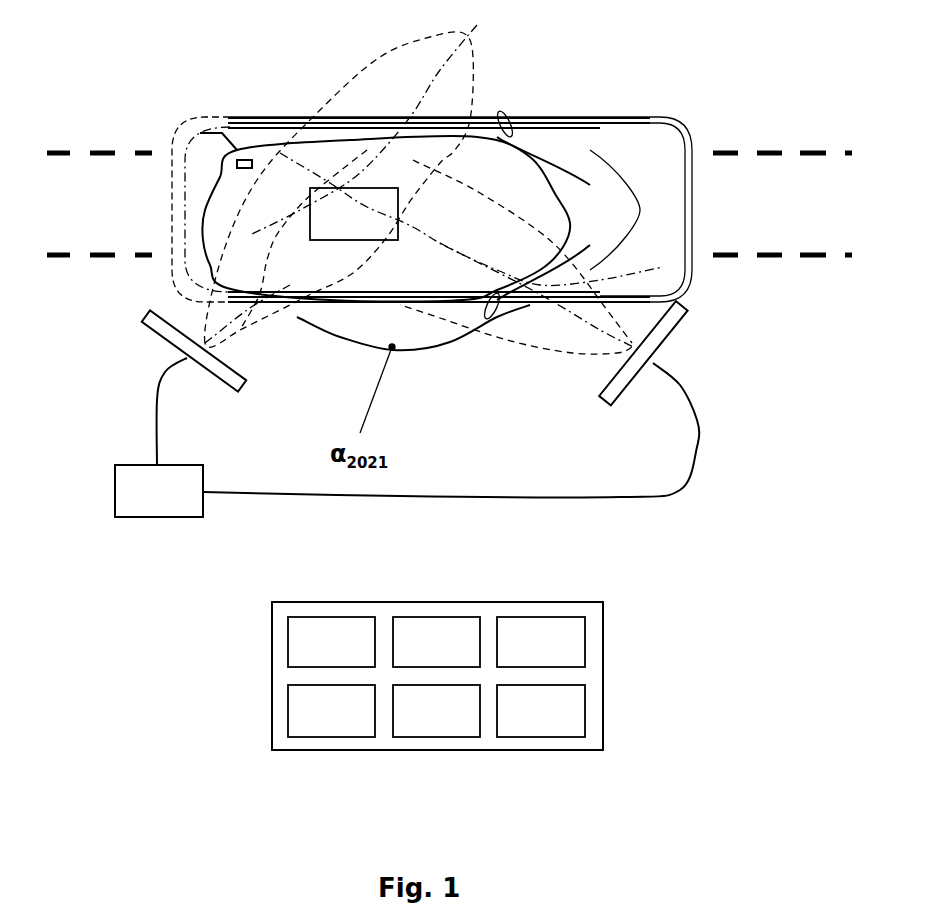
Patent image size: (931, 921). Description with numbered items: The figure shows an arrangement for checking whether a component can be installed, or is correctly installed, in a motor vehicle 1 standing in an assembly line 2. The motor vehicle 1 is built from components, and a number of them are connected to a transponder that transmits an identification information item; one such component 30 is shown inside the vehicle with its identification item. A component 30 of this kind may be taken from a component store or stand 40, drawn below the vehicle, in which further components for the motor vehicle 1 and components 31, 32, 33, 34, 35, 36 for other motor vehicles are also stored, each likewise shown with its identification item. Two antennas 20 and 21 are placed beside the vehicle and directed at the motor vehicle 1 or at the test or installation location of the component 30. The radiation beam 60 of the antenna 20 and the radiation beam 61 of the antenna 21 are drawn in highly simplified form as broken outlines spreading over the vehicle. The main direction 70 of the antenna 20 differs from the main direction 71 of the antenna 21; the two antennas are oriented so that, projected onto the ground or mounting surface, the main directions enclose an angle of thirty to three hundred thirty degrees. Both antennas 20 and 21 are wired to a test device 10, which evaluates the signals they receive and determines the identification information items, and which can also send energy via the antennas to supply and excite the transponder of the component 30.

The motor vehicle 1 is at (607, 155).
The assembly line 2 is at (100, 188).
The test device 10 is at (407, 437).
The antenna 20 is at (170, 343).
The antenna 21 is at (657, 337).
The component 30 is at (380, 188).
The component 31 is at (288, 636).
The component 32 is at (445, 620).
The component 33 is at (585, 636).
The component 34 is at (339, 737).
The component 35 is at (445, 737).
The component 36 is at (548, 737).
The component store or stand 40 is at (603, 705).
The radiation beam 60 is at (273, 323).
The radiation beam 61 is at (508, 340).
The main direction 70 is at (477, 25).
The main direction 71 is at (257, 142).